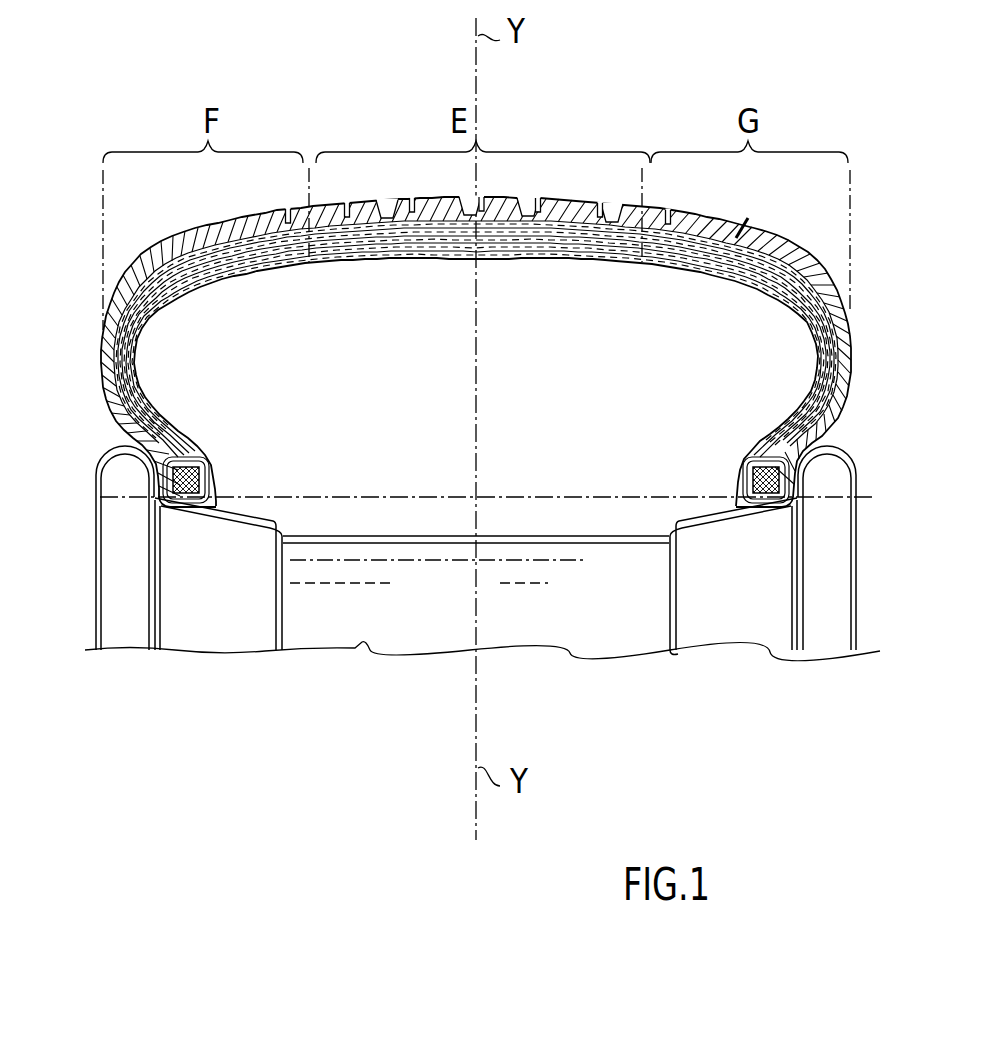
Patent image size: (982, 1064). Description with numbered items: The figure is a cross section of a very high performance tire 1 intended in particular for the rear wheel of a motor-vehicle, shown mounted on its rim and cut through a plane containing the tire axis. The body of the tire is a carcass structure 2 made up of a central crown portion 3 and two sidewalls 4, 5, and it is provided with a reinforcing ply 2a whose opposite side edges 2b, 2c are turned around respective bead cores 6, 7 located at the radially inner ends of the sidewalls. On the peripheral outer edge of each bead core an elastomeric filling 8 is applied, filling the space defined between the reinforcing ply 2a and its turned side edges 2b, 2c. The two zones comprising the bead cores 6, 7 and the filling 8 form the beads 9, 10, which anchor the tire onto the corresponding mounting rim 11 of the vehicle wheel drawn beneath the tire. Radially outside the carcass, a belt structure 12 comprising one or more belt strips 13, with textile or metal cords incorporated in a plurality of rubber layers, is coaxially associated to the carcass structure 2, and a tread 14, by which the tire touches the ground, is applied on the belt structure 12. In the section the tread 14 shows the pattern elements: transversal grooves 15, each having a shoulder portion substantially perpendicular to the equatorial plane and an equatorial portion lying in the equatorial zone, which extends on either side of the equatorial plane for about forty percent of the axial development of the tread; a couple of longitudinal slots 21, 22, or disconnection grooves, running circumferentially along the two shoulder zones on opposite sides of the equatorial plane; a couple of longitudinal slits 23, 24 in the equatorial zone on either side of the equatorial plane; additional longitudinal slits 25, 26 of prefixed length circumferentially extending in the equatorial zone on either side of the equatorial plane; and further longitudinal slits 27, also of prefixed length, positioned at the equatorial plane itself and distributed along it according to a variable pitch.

The tire 1 is at (710, 96).
The carcass structure 2 is at (637, 262).
The reinforcing ply 2a is at (155, 440).
The side edge of the reinforcing ply 2b is at (140, 440).
The side edge of the reinforcing ply 2c is at (814, 440).
The central crown portion 3 is at (486, 272).
The sidewall 4 is at (107, 322).
The sidewall 5 is at (846, 314).
The bead core 6 is at (218, 474).
The bead core 7 is at (752, 470).
The elastomeric filling 8 is at (193, 467).
The bead 9 is at (232, 488).
The bead 10 is at (728, 484).
The mounting rim 11 is at (207, 627).
The belt structure 12 is at (780, 246).
The belt strip 13 is at (745, 222).
The tread 14 is at (600, 202).
The transversal groove 15 is at (530, 197).
The longitudinal slot 21 is at (136, 262).
The longitudinal slot 22 is at (824, 262).
The longitudinal slit 23 is at (284, 208).
The longitudinal slit 24 is at (668, 208).
The additional longitudinal slit 25 is at (347, 201).
The additional longitudinal slit 26 is at (412, 197).
The further longitudinal slit 27 is at (481, 197).